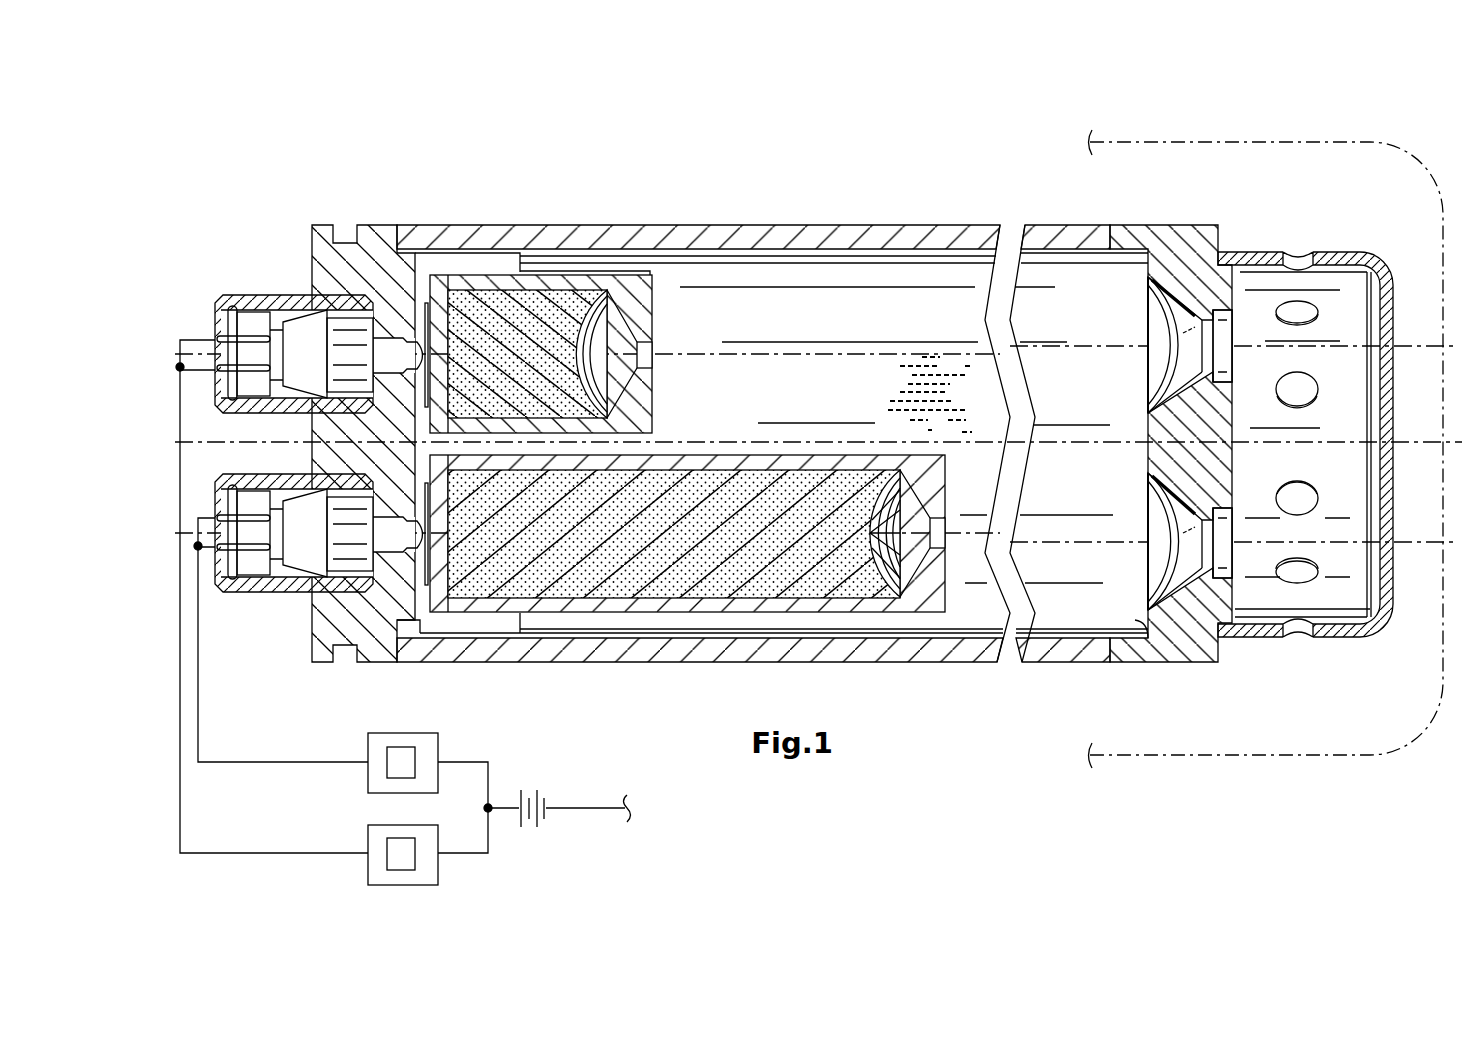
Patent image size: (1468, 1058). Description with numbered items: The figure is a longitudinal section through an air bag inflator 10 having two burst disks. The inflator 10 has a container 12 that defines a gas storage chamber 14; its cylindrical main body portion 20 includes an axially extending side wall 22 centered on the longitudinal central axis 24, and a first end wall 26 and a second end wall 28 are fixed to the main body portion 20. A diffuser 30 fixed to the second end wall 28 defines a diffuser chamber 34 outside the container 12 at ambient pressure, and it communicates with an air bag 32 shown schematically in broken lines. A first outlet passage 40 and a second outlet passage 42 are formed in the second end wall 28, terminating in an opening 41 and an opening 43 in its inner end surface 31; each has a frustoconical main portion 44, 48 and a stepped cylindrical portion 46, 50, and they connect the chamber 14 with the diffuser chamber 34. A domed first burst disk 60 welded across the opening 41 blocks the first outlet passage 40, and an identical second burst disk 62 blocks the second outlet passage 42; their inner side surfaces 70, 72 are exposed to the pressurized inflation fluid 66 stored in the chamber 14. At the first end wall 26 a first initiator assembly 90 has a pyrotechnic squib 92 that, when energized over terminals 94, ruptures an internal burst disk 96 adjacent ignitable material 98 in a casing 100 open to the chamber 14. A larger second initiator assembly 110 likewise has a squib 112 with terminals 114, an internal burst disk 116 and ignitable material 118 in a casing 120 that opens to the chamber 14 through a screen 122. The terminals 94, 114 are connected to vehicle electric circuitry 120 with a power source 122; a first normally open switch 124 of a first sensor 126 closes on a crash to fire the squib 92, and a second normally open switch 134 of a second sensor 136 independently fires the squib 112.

The inflator 10 is at (582, 142).
The container 12 is at (772, 401).
The gas storage chamber 14 is at (858, 330).
The cylindrical main body portion 20 is at (843, 216).
The side wall 22 is at (915, 240).
The longitudinal central axis 24 is at (272, 443).
The first end wall 26 is at (362, 215).
The second end wall 28 is at (1176, 448).
The diffuser 30 is at (1320, 433).
The inner end surface 31 is at (1136, 628).
The air bag 32 is at (1285, 142).
The diffuser chamber 34 is at (1338, 540).
The first outlet passage 40 is at (1170, 322).
The opening 41 is at (1147, 388).
The second outlet passage 42 is at (1183, 610).
The opening 43 is at (1147, 582).
The frustoconical main portion 44 is at (1190, 320).
The stepped cylindrical portion 46 is at (1225, 327).
The frustoconical main portion 48 is at (1187, 563).
The stepped cylindrical portion 50 is at (1236, 566).
The first burst disk 60 is at (1124, 350).
The second burst disk 62 is at (1120, 547).
The inflation fluid 66 is at (922, 400).
The inner side surface 70 is at (1168, 378).
The inner side surface 72 is at (1165, 502).
The first initiator assembly 90 is at (570, 295).
The pyrotechnic squib 92 is at (297, 531).
The terminals 94 is at (220, 342).
The internal burst disk 96 is at (418, 335).
The ignitable material 98 is at (557, 317).
The casing 100 is at (634, 284).
The second initiator assembly 110 is at (644, 584).
The pyrotechnic squib 112 is at (308, 618).
The terminals 114 is at (238, 553).
The internal burst disk 116 is at (420, 543).
The ignitable material 118 is at (558, 553).
The casing / vehicle electric circuitry 120 is at (496, 804).
The screen / power source 122 is at (903, 588).
The first normally open switch 124 is at (417, 860).
The first sensor 126 is at (405, 874).
The second normally open switch 134 is at (400, 747).
The second sensor 136 is at (374, 739).